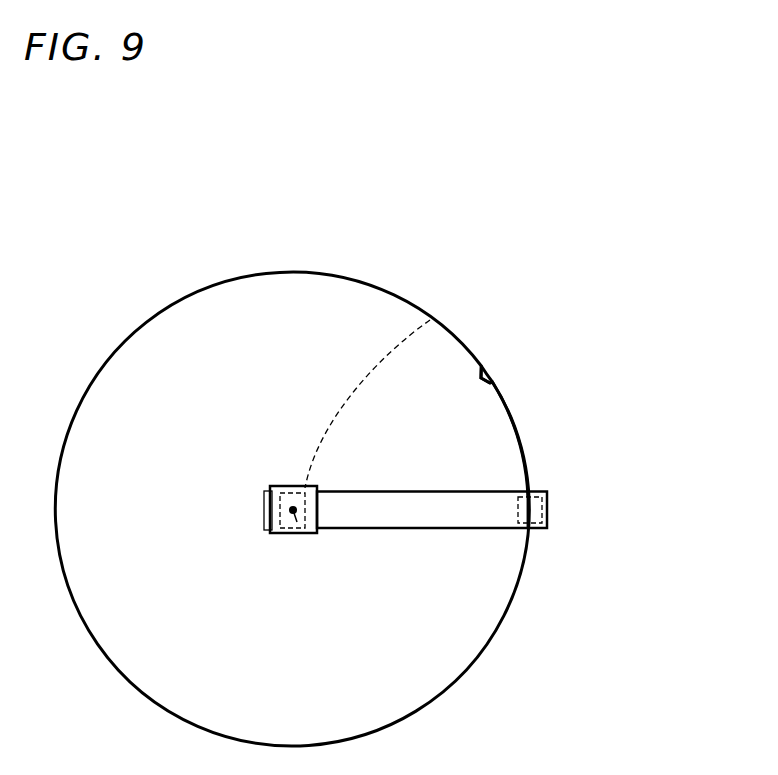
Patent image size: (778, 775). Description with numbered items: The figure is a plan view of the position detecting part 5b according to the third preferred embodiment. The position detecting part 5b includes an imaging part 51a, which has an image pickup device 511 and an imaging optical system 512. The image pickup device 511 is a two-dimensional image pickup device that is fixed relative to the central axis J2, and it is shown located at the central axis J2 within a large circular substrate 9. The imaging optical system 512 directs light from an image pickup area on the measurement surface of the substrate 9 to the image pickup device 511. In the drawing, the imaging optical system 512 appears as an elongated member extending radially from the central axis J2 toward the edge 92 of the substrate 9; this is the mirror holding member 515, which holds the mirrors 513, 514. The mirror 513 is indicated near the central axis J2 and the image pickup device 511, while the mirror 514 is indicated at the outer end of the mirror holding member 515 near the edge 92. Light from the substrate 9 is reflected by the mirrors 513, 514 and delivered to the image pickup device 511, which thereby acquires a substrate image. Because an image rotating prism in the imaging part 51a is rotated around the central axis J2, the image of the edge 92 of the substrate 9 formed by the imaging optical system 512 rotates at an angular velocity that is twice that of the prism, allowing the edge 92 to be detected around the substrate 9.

The position detecting part 5b is at (593, 218).
The imaging part 51a is at (426, 406).
The image pickup device 511 is at (290, 486).
The imaging optical system 512 is at (525, 352).
The mirror 513 is at (430, 320).
The mirror 514 is at (537, 491).
The mirror holding member 515 is at (422, 492).
The central axis J2 is at (304, 536).
The substrate 9 is at (493, 602).
The edge 92 is at (518, 583).